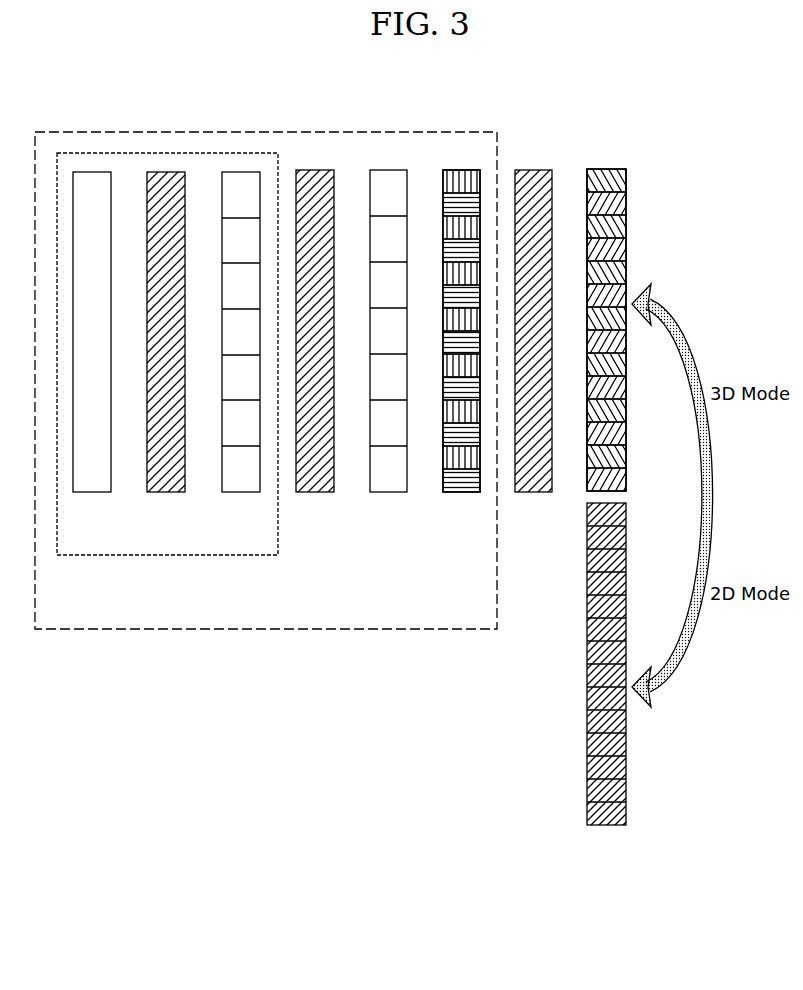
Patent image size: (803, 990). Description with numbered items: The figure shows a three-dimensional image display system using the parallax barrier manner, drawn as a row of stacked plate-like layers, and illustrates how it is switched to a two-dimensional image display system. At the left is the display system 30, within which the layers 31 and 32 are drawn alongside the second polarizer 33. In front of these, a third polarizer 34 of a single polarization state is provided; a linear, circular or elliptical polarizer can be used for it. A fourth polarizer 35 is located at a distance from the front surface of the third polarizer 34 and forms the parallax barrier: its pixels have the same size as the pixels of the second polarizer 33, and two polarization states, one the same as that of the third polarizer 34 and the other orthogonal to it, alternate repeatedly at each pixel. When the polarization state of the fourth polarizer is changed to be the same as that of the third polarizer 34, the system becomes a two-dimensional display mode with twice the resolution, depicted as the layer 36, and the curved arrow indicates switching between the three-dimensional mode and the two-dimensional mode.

The display panel unit 30 is at (175, 556).
The first polarizing plate 31 is at (316, 493).
The liquid crystal cell 32 is at (390, 493).
The second polarizer 33 is at (462, 493).
The third polarizer 34 is at (534, 493).
The fourth polarizer 35 is at (627, 177).
The lens array in 2D mode 36 is at (627, 806).